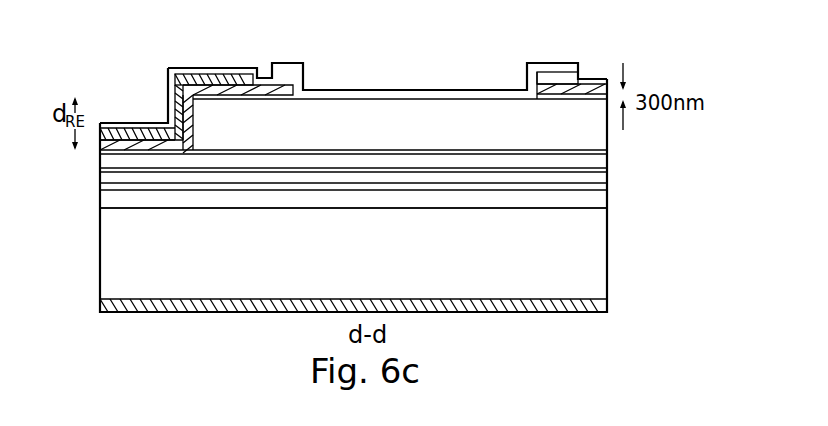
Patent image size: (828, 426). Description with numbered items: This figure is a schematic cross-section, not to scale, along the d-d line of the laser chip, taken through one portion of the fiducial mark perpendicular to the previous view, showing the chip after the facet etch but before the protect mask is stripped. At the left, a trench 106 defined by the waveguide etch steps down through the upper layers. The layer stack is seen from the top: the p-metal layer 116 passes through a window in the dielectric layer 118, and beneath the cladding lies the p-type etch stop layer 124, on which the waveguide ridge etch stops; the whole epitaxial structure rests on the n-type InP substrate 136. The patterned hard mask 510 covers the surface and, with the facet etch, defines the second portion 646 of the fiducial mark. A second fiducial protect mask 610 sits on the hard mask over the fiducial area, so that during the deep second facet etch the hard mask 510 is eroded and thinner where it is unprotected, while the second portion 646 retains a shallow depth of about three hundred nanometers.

The trench 106 is at (152, 113).
The p-metal layer 116 is at (198, 75).
The dielectric layer 118 is at (175, 77).
The p-type etch stop layer 124 is at (307, 152).
The n-type InP substrate 136 is at (108, 243).
The patterned hard mask 510 is at (245, 68).
The second fiducial protect mask 610 is at (557, 70).
The second portion of the fiducial mark 646 is at (430, 72).